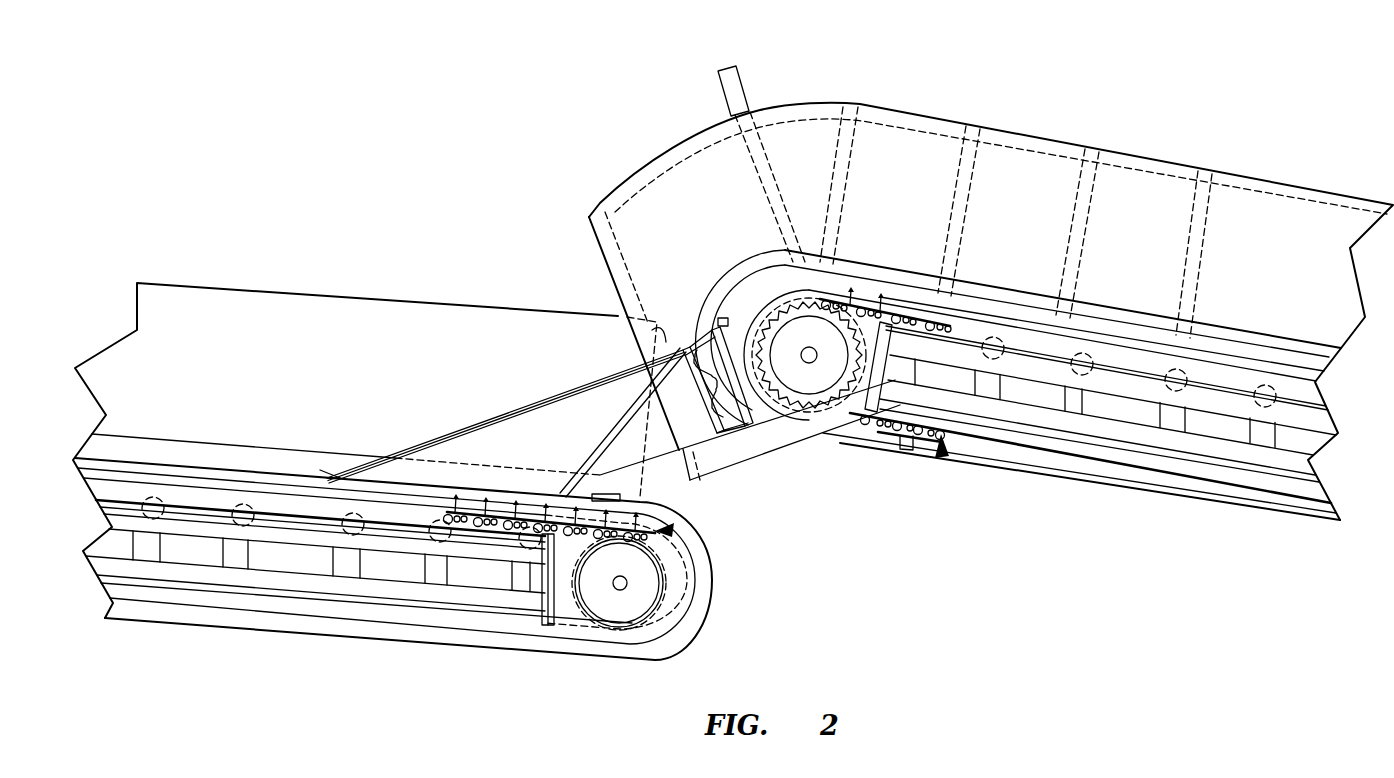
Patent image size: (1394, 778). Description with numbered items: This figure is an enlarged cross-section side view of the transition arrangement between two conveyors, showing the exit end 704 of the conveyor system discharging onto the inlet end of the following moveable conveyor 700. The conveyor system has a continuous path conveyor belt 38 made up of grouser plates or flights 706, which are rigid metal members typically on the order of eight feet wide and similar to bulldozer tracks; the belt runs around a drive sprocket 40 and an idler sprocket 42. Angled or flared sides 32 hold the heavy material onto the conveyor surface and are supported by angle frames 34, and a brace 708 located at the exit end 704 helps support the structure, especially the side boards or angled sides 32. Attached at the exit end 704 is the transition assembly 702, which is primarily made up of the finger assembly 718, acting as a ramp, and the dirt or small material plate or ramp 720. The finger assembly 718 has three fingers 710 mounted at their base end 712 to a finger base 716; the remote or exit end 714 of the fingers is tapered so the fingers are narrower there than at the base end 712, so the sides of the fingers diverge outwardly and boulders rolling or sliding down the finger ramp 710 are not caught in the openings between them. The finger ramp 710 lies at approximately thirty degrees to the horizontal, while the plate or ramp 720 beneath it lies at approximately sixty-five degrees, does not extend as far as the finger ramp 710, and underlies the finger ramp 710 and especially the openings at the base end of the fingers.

The angled or flared sides 32 is at (216, 383).
The angle frames 34 is at (978, 127).
The conveyor belt 38 is at (668, 530).
The drive sprocket 40 is at (810, 375).
The idler sprocket 42 is at (638, 616).
The conveyor 700 is at (536, 659).
The transition assembly 702 is at (521, 352).
The exit end 704 is at (676, 142).
The grouser plates or flights 706 is at (622, 508).
The brace 708 is at (741, 80).
The fingers 710 is at (432, 441).
The base end 712 is at (653, 334).
The exit end of the fingers 714 is at (327, 478).
The finger base 716 is at (716, 432).
The finger assembly 718 is at (470, 400).
The dirt or small material plate or ramp 720 is at (612, 434).